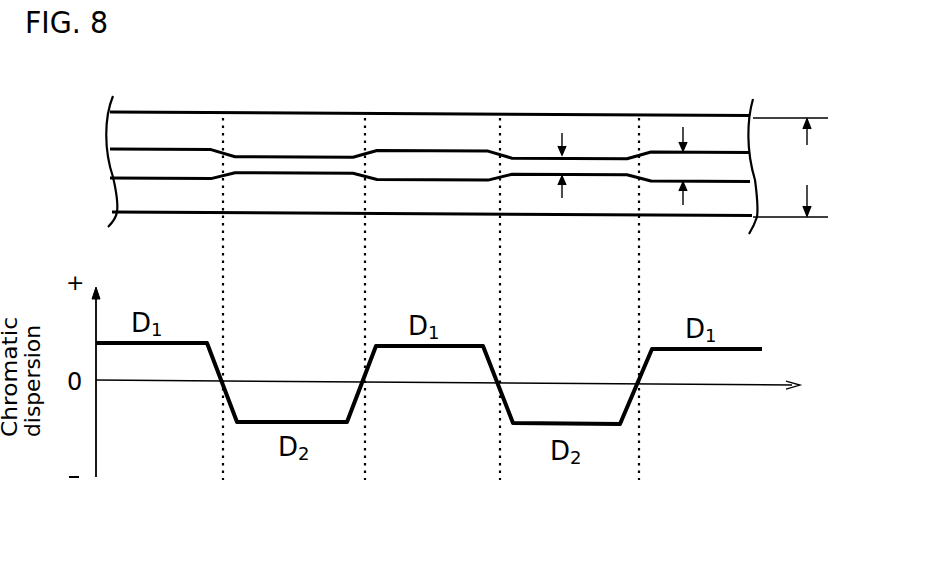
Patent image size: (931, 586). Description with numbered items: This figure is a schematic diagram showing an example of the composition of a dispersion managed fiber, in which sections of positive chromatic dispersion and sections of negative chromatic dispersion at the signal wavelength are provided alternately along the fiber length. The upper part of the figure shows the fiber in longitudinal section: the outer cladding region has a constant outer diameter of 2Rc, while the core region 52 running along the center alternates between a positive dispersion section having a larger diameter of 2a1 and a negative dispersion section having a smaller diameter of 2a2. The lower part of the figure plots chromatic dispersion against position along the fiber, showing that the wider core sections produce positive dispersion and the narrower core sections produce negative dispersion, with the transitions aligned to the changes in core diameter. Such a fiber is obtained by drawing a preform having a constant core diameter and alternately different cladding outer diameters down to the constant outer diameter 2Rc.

The core region 52 is at (112, 164).
The diameter of positive dispersion section 2a1 is at (708, 164).
The diameter of negative dispersion section 2a2 is at (586, 162).
The constant outer diameter of cladding region 2Rc is at (792, 167).